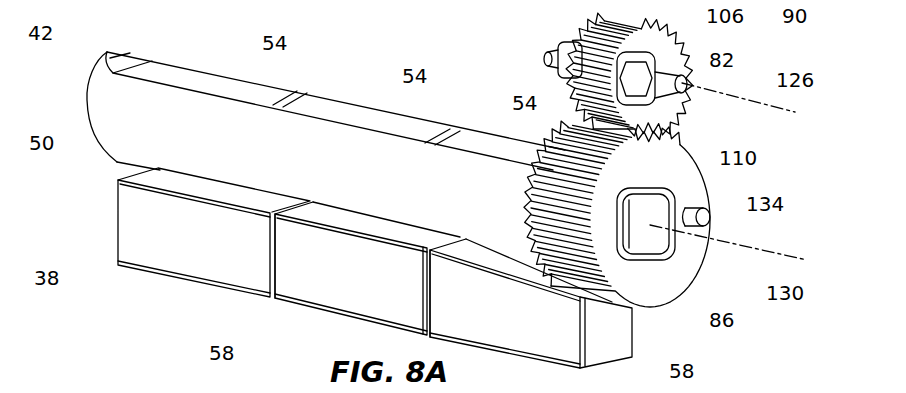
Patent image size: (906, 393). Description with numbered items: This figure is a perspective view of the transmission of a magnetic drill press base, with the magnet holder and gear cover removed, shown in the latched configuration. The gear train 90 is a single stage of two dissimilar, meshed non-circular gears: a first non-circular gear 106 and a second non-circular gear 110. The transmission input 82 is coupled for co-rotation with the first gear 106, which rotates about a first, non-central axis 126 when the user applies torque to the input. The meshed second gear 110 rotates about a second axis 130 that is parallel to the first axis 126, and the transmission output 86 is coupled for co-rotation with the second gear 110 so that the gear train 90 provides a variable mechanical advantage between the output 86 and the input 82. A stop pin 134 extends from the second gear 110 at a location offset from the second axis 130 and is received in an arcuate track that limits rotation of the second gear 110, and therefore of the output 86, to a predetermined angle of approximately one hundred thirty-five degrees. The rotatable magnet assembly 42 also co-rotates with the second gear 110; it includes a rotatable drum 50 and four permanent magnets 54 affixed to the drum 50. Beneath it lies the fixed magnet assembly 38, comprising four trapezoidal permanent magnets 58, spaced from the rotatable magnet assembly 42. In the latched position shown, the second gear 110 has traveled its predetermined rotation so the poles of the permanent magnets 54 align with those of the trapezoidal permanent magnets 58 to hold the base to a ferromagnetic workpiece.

The fixed magnet assembly 38 is at (90, 241).
The rotatable magnet assembly 42 is at (66, 75).
The rotatable drum 50 is at (110, 132).
The permanent magnets 54 is at (235, 86).
The trapezoidal permanent magnets 58 is at (233, 343).
The transmission input 82 is at (684, 83).
The transmission output 86 is at (652, 240).
The gear train 90 is at (766, 57).
The first non-circular gear 106 is at (664, 42).
The second non-circular gear 110 is at (655, 160).
The first axis 126 is at (757, 101).
The second axis 130 is at (763, 256).
The stop pin 134 is at (712, 218).